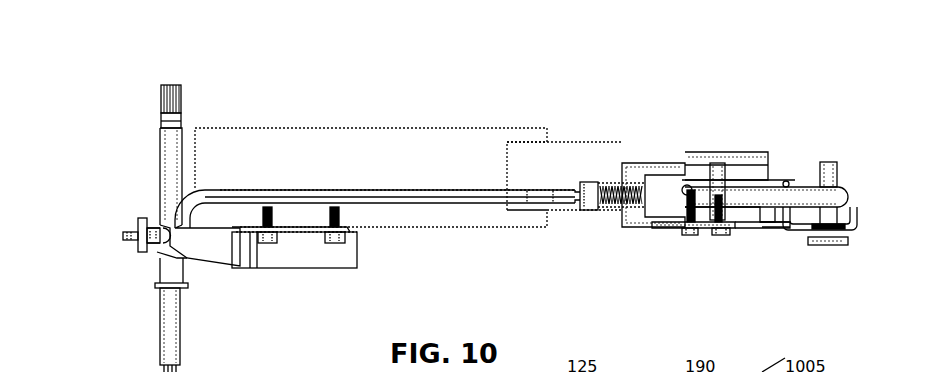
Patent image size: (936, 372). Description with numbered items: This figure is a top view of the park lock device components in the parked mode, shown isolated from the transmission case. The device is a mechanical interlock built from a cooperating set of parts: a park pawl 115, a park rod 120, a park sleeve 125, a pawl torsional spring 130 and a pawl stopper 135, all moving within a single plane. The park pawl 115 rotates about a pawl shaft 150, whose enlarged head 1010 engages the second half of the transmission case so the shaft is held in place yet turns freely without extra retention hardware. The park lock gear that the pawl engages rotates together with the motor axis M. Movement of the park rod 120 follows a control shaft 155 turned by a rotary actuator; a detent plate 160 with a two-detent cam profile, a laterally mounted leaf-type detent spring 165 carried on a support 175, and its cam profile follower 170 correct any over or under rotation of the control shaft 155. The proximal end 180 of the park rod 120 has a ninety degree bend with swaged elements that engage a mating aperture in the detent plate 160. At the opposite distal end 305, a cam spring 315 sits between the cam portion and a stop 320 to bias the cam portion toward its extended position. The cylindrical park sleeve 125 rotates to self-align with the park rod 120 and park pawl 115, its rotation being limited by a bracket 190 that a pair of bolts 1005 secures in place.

The park pawl 115 is at (762, 195).
The park rod 120 is at (422, 192).
The park sleeve 125 is at (662, 183).
The pawl torsional spring 130 is at (793, 227).
The pawl stopper 135 is at (726, 173).
The pawl shaft 150 is at (832, 173).
The control shaft 155 is at (168, 350).
The detent plate 160 is at (128, 232).
The detent spring 165 is at (205, 252).
The cam profile follower 170 is at (148, 250).
The support 175 is at (333, 257).
The proximal end 180 is at (181, 214).
The bracket 190 is at (664, 226).
The distal end 305 is at (687, 190).
The cam spring 315 is at (615, 185).
The stop 320 is at (587, 208).
The bolts 1005 is at (722, 235).
The enlarged head 1010 is at (833, 242).
The motor axis M is at (753, 230).